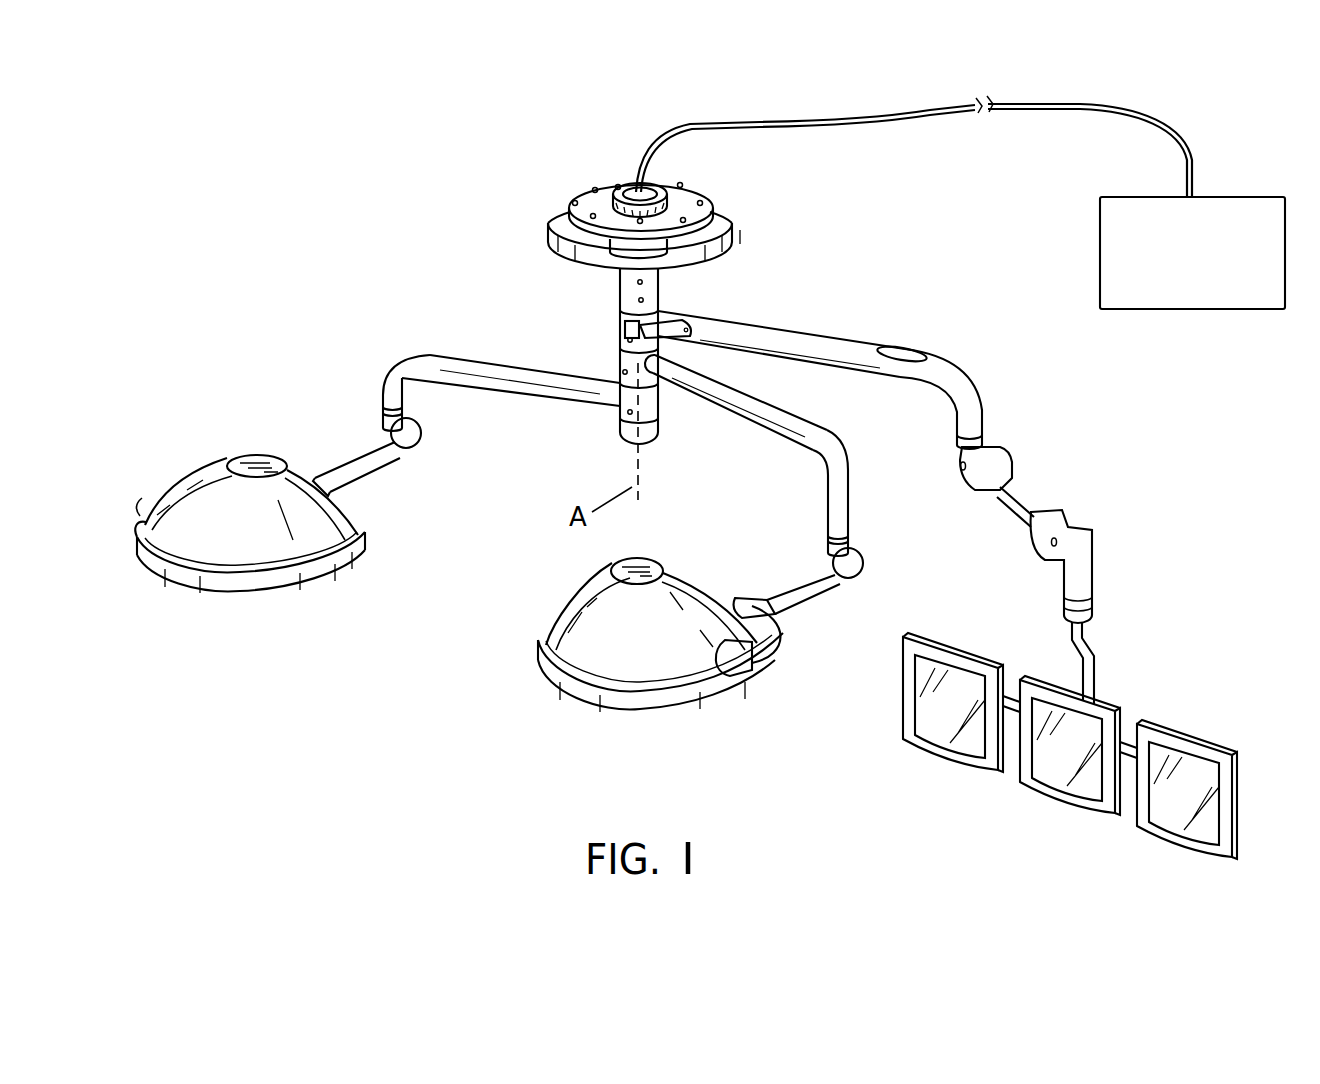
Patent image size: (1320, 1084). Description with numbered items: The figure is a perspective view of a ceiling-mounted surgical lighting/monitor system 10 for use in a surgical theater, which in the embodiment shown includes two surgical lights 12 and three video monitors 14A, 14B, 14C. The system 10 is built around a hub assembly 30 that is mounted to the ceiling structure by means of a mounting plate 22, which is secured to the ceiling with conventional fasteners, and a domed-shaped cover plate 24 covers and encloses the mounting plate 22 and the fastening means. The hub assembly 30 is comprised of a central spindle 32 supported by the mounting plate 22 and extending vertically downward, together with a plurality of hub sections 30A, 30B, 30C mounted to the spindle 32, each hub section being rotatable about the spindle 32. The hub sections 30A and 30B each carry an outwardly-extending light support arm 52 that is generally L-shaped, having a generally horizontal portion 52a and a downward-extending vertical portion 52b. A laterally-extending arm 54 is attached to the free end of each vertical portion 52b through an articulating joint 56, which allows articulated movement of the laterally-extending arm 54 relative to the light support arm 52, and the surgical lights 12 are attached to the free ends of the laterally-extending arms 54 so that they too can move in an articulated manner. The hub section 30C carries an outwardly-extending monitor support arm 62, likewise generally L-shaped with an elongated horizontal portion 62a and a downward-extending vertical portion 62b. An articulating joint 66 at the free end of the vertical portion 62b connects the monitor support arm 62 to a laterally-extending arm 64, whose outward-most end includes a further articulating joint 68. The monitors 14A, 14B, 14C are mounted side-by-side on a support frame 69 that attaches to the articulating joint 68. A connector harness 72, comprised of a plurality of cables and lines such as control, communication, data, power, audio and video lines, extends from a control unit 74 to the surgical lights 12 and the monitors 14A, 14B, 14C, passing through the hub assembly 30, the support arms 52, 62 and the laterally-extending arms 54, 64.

The surgical lighting/monitor system 10 is at (312, 230).
The surgical light 12 is at (205, 591).
The video monitor 14A is at (930, 752).
The video monitor 14B is at (1045, 803).
The video monitor 14C is at (1160, 846).
The mounting plate 22 is at (690, 203).
The domed-shaped cover plate 24 is at (547, 240).
The hub assembly 30 is at (600, 446).
The hub section 30A is at (664, 410).
The hub section 30B is at (614, 352).
The hub section 30C is at (614, 315).
The central spindle 32 is at (626, 194).
The light support arm 52 is at (606, 429).
The horizontal portion 52a is at (500, 366).
The vertical portion 52b is at (380, 386).
The laterally-extending arm 54 is at (340, 458).
The articulating joint 56 is at (414, 449).
The monitor support arm 62 is at (870, 352).
The horizontal portion 62a is at (836, 340).
The vertical portion 62b is at (984, 421).
The laterally-extending arm 64 is at (1036, 500).
The articulating joint 66 is at (996, 463).
The articulating joint 68 is at (1072, 541).
The support frame 69 is at (1096, 690).
The connector harness 72 is at (874, 125).
The control unit 74 is at (1190, 310).